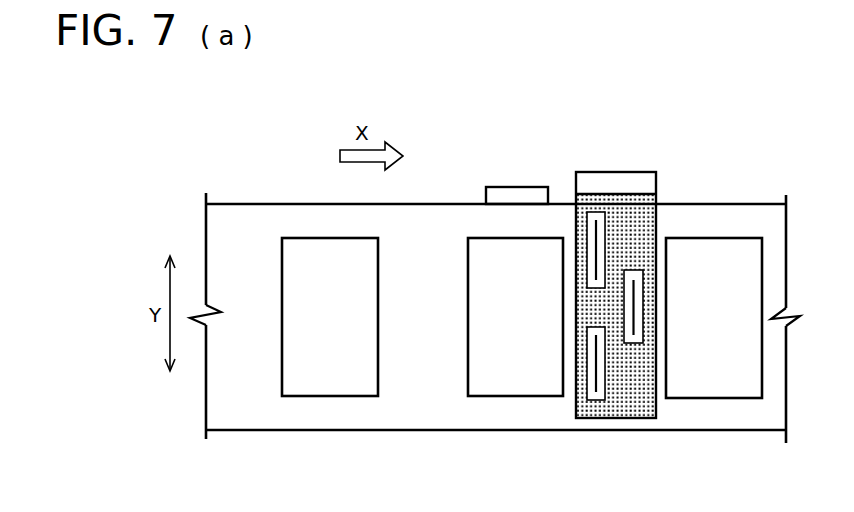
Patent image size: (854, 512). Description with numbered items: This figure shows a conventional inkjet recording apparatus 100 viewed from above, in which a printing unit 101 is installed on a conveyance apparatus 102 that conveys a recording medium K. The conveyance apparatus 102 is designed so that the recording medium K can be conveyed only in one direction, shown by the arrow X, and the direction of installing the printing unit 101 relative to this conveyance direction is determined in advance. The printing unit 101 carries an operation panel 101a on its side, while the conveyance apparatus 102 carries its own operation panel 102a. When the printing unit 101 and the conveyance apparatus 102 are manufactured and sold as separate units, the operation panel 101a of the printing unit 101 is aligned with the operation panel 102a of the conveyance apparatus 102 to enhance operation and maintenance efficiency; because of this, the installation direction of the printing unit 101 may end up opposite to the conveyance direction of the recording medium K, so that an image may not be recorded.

The inkjet recording apparatus 100 is at (789, 133).
The printing unit 101 is at (601, 249).
The operation panel 101a is at (620, 172).
The conveyance apparatus 102 is at (496, 155).
The operation panel 102a is at (517, 187).
The recording medium K is at (312, 397).